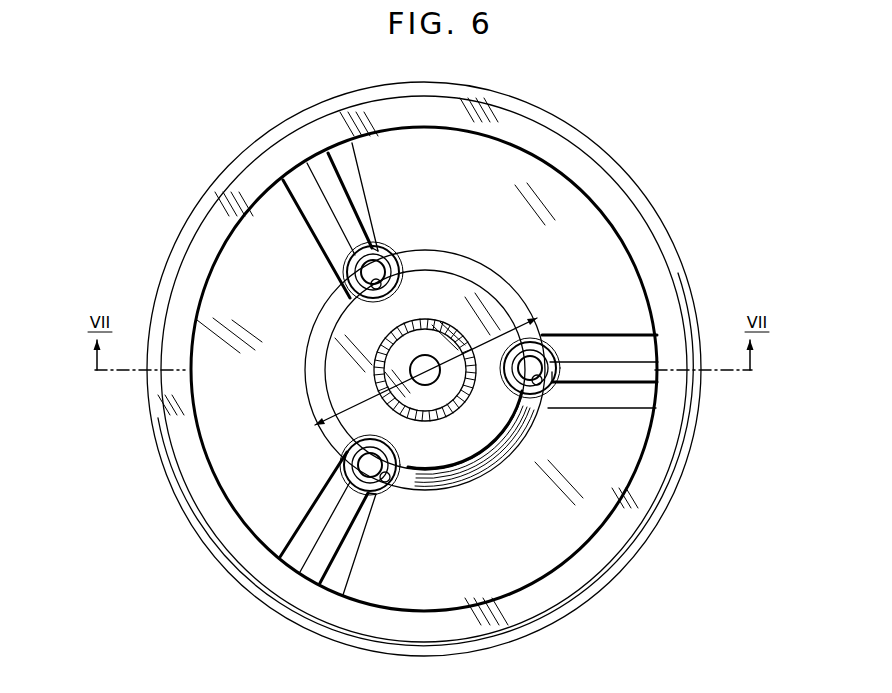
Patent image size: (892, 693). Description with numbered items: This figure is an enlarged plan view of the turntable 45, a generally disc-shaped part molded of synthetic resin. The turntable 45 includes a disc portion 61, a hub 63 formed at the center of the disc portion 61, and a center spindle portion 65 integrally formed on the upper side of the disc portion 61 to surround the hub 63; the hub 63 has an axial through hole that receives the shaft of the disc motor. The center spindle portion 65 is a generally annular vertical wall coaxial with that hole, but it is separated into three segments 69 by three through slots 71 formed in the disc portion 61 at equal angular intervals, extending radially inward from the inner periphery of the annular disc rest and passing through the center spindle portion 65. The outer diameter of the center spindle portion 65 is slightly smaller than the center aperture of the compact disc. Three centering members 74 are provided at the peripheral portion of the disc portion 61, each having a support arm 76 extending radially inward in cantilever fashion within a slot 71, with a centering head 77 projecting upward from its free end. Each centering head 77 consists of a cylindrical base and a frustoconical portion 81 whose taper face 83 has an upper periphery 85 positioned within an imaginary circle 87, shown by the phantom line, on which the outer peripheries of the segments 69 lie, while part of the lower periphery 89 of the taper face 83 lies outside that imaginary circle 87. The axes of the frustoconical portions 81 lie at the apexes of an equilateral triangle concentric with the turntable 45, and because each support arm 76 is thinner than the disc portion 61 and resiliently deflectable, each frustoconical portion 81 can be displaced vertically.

The turntable 45 is at (599, 141).
The disc portion 61 is at (592, 224).
The hub 63 is at (442, 330).
The center spindle portion 65 is at (480, 262).
The segments 69 is at (512, 283).
The through slots 71 is at (367, 214).
The centering members 74 is at (357, 219).
The support arm 76 is at (320, 245).
The centering head 77 is at (350, 290).
The frustoconical portion 81 is at (366, 275).
The taper face 83 is at (546, 395).
The upper periphery 85 is at (399, 270).
The imaginary circle 87 is at (385, 249).
The lower periphery 89 is at (375, 288).